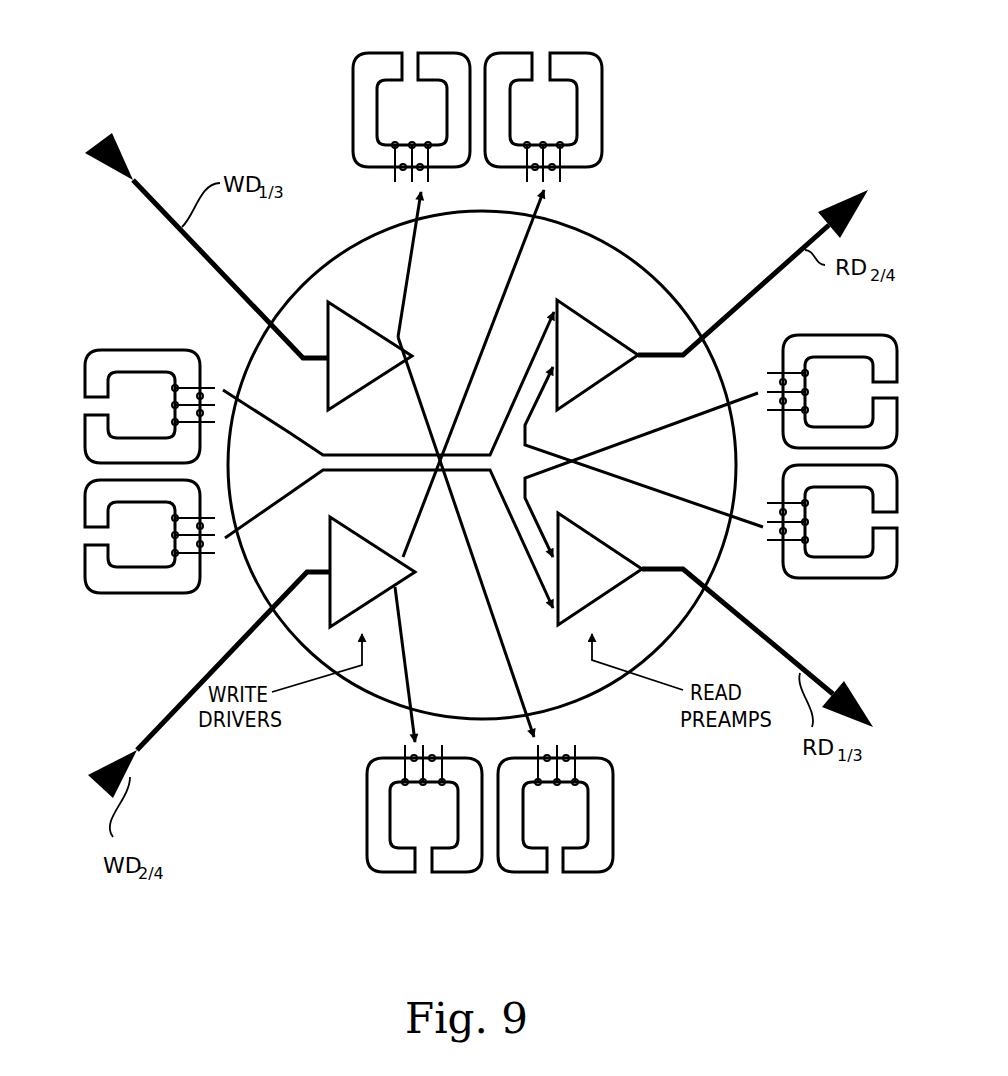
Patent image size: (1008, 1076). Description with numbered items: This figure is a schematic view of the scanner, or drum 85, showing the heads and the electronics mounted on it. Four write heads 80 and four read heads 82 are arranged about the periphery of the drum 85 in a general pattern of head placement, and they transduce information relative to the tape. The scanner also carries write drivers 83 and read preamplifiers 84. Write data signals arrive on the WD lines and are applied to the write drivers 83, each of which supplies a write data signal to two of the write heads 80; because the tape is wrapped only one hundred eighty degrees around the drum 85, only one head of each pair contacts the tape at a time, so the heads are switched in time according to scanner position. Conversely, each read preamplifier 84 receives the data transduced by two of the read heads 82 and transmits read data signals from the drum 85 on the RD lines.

The write heads 80 is at (580, 920).
The read heads 82 is at (833, 615).
The write drivers 83 is at (368, 540).
The read preamplifiers 84 is at (602, 542).
The drum 85 is at (647, 637).